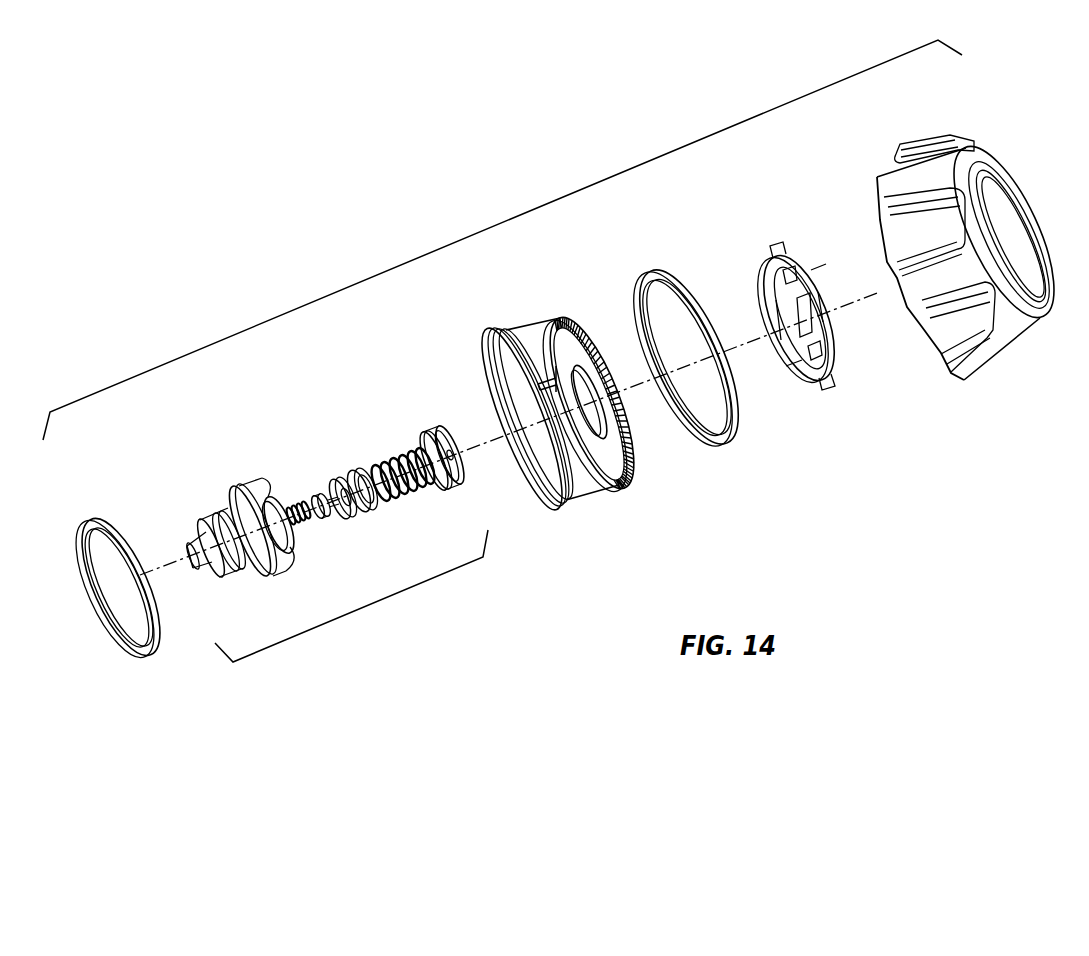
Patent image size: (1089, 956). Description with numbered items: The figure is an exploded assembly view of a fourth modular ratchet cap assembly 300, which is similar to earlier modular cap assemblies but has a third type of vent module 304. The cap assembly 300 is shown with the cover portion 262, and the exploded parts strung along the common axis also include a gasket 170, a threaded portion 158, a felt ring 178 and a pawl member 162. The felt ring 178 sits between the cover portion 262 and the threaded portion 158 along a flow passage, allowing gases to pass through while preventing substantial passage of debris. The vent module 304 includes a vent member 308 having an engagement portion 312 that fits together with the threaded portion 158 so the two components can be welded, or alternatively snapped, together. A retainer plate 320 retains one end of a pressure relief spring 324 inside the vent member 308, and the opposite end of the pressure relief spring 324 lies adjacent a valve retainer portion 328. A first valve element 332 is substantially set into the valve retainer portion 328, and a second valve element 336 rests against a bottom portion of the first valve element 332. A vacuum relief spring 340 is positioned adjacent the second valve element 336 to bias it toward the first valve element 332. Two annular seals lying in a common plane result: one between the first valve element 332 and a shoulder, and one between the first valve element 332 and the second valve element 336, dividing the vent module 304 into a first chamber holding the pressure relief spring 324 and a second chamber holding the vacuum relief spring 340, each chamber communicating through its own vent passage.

The modular cap assembly 300 is at (403, 260).
The vent module 304 is at (330, 628).
The vent member 308 is at (208, 532).
The engagement portion 312 is at (243, 490).
The retainer plate 320 is at (448, 432).
The pressure relief spring 324 is at (395, 460).
The valve retainer portion 328 is at (350, 468).
The first valve element 332 is at (350, 505).
The second valve element 336 is at (318, 497).
The vacuum relief spring 340 is at (300, 525).
The gasket 170 is at (105, 517).
The felt ring 178 is at (658, 273).
The threaded portion 158 is at (595, 487).
The pawl member 162 is at (826, 403).
The cover portion 262 is at (1015, 215).